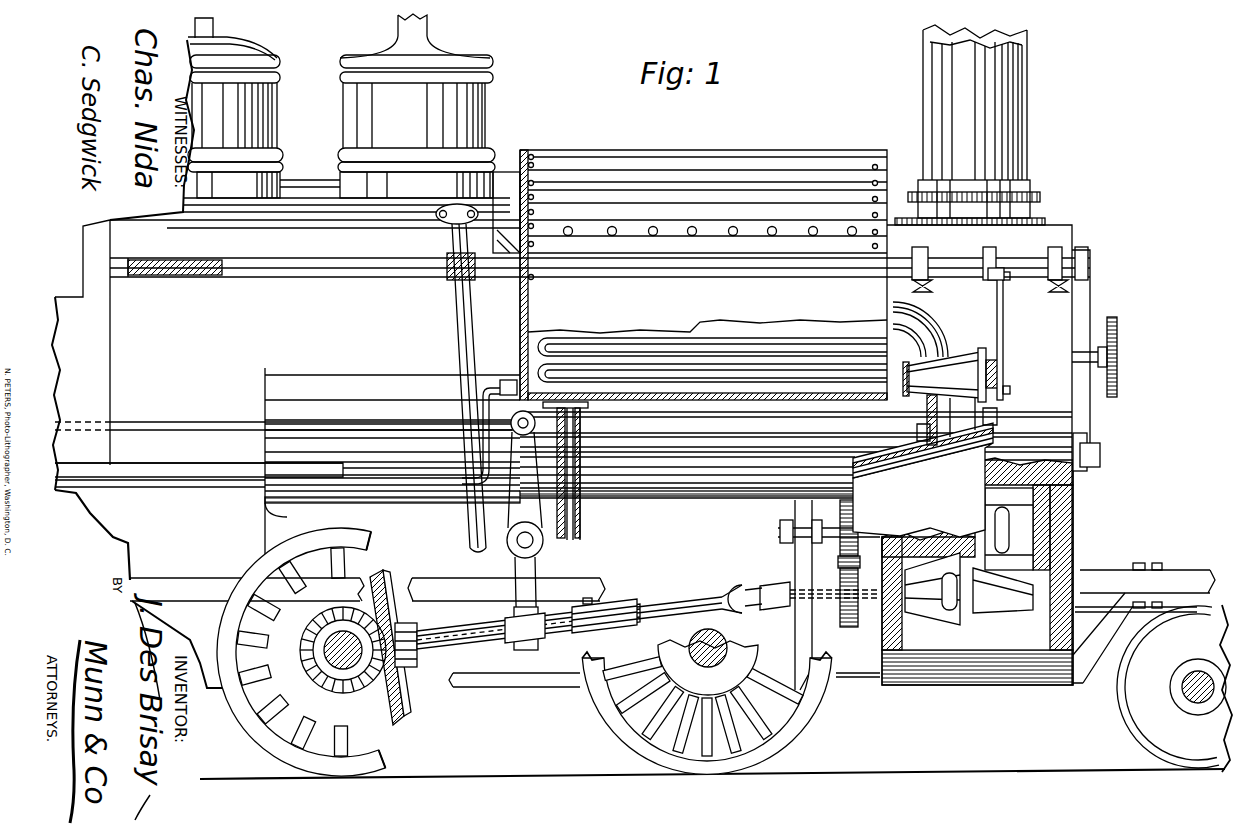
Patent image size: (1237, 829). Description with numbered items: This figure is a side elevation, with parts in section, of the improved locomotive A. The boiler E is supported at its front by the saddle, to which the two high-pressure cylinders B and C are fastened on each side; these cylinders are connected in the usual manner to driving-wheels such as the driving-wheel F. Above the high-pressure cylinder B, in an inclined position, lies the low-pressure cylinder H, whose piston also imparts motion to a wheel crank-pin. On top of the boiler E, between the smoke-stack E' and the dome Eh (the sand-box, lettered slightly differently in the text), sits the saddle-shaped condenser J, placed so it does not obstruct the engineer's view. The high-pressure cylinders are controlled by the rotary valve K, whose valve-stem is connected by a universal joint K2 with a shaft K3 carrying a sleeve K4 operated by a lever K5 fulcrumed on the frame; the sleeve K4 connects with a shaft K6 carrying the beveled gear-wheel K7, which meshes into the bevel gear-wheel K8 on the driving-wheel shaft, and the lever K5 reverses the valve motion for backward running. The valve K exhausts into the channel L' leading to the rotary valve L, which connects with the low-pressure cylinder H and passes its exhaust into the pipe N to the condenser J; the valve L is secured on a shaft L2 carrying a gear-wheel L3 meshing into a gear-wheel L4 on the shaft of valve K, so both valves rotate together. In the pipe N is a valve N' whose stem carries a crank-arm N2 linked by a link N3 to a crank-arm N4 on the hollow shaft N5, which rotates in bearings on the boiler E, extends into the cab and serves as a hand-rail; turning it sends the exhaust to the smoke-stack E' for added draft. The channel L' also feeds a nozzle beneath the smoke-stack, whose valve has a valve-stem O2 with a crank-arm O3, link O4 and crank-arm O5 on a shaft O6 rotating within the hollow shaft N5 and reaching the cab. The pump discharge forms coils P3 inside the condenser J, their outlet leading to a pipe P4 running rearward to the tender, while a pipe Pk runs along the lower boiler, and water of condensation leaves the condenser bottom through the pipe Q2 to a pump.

The locomotive A is at (1015, 455).
The high-pressure cylinder B is at (1018, 675).
The high-pressure cylinder C is at (240, 727).
The boiler E is at (562, 400).
The smoke-stack E' is at (980, 125).
The steam dome Eh is at (487, 108).
The driving-wheel F is at (843, 717).
The low-pressure cylinder H is at (925, 466).
The condenser J is at (776, 155).
The rotary valve K is at (832, 604).
The universal joint K2 is at (755, 580).
The shaft K3 is at (712, 592).
The sleeve K4 is at (547, 636).
The lever K5 is at (536, 556).
The shaft K6 is at (448, 646).
The beveled gear-wheel K7 is at (410, 658).
The bevel gear-wheel K8 is at (343, 697).
The rotary valve L is at (1009, 529).
The channel L' is at (998, 590).
The shaft L2 is at (838, 535).
The gear-wheel L3 is at (843, 556).
The gear-wheel L4 is at (860, 622).
The pipe N is at (937, 383).
The valve N' is at (936, 330).
The crank-arm N2 is at (997, 372).
The link N3 is at (997, 325).
The crank-arm N4 is at (990, 280).
The hollow shaft N5 is at (322, 265).
The valve-stem O2 is at (1073, 436).
The crank-arm O3 is at (1087, 468).
The link O4 is at (1097, 407).
The crank-arm O5 is at (1090, 257).
The shaft O6 is at (206, 262).
The coils P3 is at (707, 351).
The pipe P4 is at (497, 380).
The bar Pk is at (50, 515).
The pipe Q2 is at (576, 533).